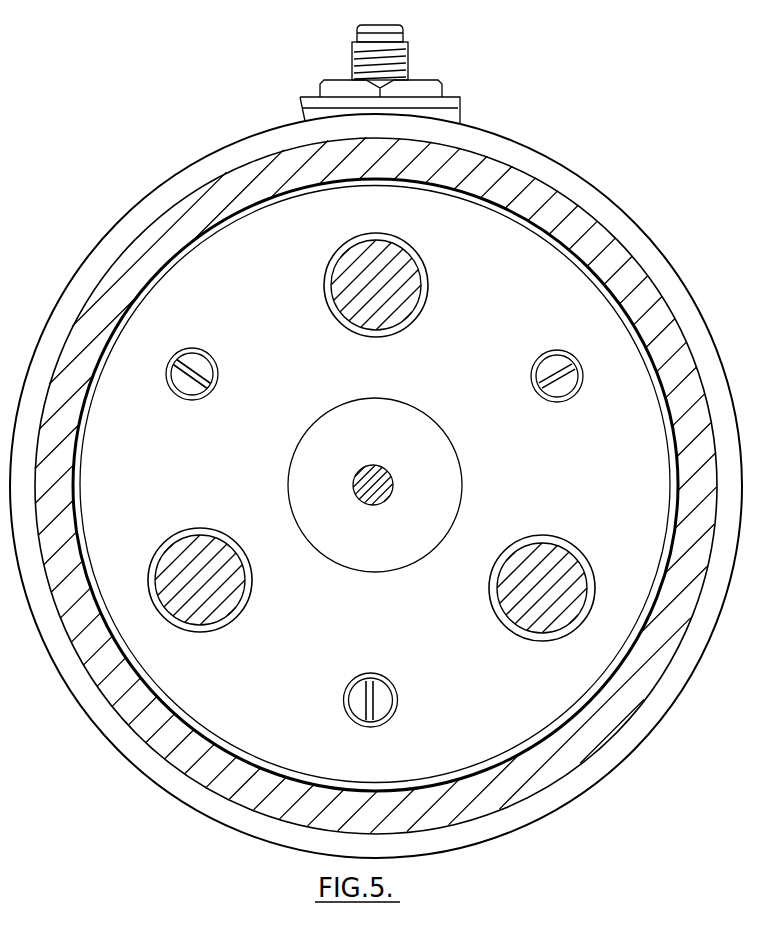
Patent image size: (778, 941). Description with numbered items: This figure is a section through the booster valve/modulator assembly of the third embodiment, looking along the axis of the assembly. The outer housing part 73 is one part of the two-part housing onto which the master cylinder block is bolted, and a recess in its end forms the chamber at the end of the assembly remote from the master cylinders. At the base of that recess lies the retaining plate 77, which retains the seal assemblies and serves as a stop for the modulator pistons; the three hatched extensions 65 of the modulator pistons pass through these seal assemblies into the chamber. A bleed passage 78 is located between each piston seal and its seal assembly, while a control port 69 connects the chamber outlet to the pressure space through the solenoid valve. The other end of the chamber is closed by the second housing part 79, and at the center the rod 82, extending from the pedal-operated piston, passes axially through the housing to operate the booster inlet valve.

The extension 65 is at (398, 278).
The control port 69 is at (448, 100).
The housing part 73 is at (528, 152).
The retaining plate 77 is at (466, 676).
The bleed passage 78 is at (447, 113).
The second housing part 79 is at (567, 210).
The rod 82 is at (377, 480).